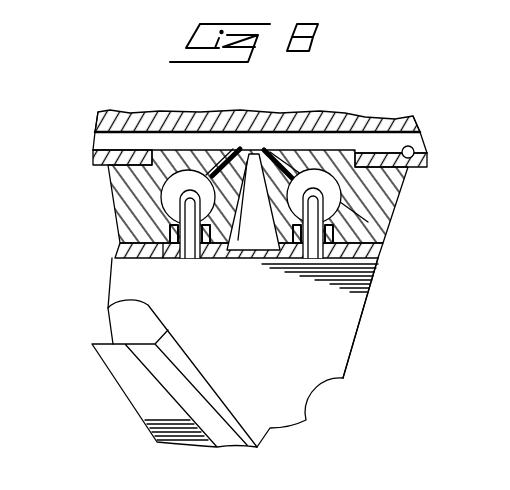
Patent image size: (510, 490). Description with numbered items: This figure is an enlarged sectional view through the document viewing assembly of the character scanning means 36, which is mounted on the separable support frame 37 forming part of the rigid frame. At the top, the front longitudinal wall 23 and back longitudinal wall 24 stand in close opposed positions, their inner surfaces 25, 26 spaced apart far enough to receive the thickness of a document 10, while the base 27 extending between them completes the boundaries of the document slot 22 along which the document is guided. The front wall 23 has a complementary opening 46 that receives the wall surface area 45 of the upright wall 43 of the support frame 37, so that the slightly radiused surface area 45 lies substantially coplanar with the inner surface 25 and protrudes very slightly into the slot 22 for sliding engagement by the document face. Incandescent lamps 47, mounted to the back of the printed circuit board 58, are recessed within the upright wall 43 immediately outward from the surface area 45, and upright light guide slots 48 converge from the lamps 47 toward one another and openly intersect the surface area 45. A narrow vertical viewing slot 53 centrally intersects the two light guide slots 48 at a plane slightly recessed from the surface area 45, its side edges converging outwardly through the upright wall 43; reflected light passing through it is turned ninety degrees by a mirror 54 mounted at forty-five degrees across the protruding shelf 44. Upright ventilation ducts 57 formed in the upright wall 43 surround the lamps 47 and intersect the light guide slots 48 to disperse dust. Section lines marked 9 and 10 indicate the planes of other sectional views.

The section line 9- 9 is at (110, 197).
The document 10 is at (83, 138).
The document slot 22 is at (265, 133).
The front longitudinal wall 23 is at (100, 164).
The back longitudinal wall 24 is at (362, 125).
The inner surface 25 is at (408, 167).
The inner surface 26 is at (411, 147).
The base 27 is at (148, 133).
The character scanning means 36 is at (384, 285).
The separable support frame 37 is at (385, 248).
The upright wall 43 is at (127, 227).
The protruding shelf 44 is at (350, 335).
The wall surface area 45 is at (242, 113).
The complementary opening 46 is at (360, 151).
The incandescent lamps 47 is at (251, 213).
The light guide slots 48 is at (217, 150).
The viewing slot 53 is at (251, 153).
The mirror 54 is at (207, 375).
The ventilation ducts 57 is at (336, 215).
The printed circuit board 58 is at (163, 265).